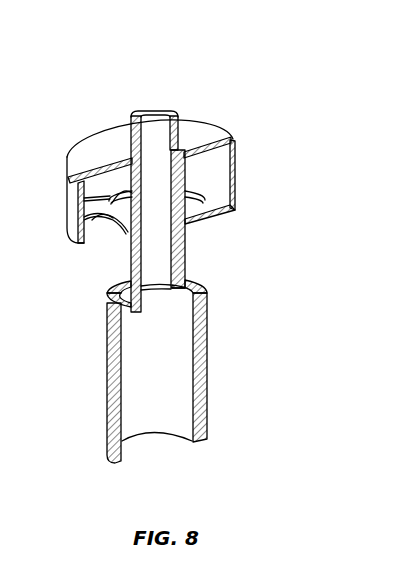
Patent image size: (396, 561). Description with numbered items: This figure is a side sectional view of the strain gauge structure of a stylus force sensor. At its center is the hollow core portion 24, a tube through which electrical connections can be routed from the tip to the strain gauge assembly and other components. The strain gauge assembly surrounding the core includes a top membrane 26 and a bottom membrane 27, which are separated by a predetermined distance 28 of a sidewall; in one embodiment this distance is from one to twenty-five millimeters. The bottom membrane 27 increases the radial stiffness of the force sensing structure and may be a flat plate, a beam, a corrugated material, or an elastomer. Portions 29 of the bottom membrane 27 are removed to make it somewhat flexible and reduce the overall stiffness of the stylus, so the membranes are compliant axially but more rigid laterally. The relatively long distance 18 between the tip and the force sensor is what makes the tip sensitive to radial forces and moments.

The distance 18 is at (186, 280).
The hollow core portion 24 is at (148, 116).
The top membrane 26 is at (204, 130).
The bottom membrane 27 is at (213, 203).
The predetermined distance 28 is at (181, 182).
The portions 29 is at (123, 195).